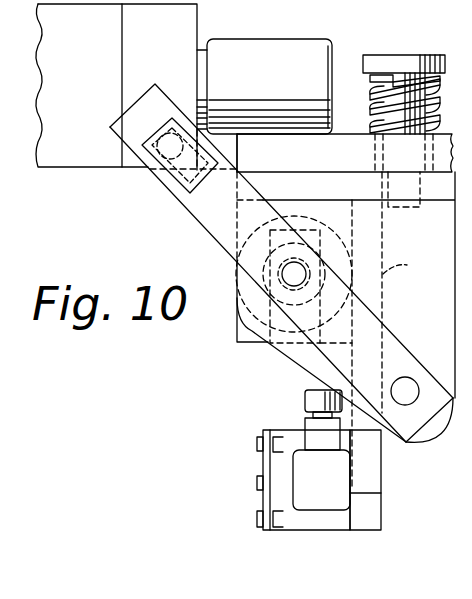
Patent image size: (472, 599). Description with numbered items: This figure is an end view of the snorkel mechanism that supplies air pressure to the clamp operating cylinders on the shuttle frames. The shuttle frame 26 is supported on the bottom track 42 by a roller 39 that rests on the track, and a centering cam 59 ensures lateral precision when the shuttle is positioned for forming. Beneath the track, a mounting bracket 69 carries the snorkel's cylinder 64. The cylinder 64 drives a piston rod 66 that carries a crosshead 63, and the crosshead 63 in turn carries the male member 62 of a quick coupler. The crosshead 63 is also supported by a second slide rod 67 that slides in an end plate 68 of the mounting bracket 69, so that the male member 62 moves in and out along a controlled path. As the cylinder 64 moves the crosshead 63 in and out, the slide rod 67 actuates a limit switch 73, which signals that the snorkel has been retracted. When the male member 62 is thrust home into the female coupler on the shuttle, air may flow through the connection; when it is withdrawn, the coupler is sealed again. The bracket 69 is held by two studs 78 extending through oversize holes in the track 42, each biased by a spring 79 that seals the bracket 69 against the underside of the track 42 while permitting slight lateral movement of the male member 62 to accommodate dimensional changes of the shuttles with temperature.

The shuttle frame 26 is at (83, 168).
The roller 39 is at (264, 55).
The bottom track 42 is at (335, 140).
The centering cam 59 is at (228, 148).
The male member 62 is at (163, 185).
The crosshead 63 is at (207, 221).
The cylinder 64 is at (283, 347).
The piston rod 66 is at (290, 276).
The slide rod 67 is at (405, 393).
The end plate 68 is at (312, 363).
The mounting bracket 69 is at (440, 193).
The limit switch 73 is at (307, 478).
The stud 78 is at (408, 55).
The spring 79 is at (437, 87).